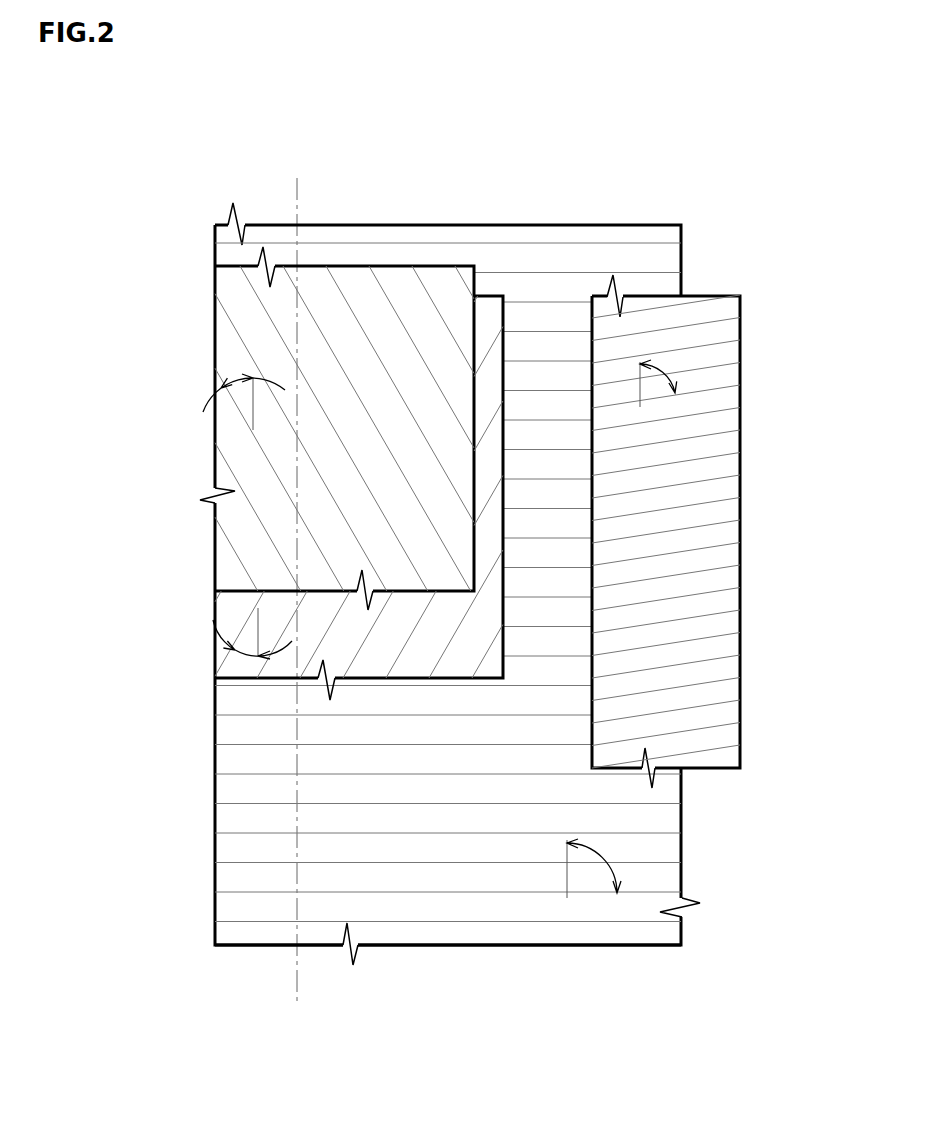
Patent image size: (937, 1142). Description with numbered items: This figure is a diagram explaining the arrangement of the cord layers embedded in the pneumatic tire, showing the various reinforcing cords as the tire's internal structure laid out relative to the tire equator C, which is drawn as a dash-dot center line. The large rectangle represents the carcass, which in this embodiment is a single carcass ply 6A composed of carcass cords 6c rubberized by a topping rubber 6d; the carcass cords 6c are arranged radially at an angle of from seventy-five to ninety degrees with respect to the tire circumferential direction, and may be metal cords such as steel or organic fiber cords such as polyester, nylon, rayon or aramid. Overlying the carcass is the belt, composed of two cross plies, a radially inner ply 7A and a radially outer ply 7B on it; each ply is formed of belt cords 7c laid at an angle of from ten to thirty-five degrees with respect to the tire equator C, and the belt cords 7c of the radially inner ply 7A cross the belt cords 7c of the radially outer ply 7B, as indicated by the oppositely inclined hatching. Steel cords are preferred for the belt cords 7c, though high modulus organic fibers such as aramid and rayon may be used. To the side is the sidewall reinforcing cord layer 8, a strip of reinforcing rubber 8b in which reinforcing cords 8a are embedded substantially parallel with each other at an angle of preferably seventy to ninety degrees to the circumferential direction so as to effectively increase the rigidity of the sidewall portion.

The tire equator C is at (296, 569).
The carcass ply 6A is at (572, 258).
The carcass cords 6c is at (598, 922).
The topping rubber 6d is at (512, 905).
The radially inner ply 7A is at (488, 313).
The radially outer ply 7B is at (410, 303).
The belt cords 7c is at (340, 287).
The sidewall reinforcing cord layer 8 is at (708, 330).
The reinforcing cords 8a is at (700, 412).
The reinforcing rubber 8b is at (695, 515).